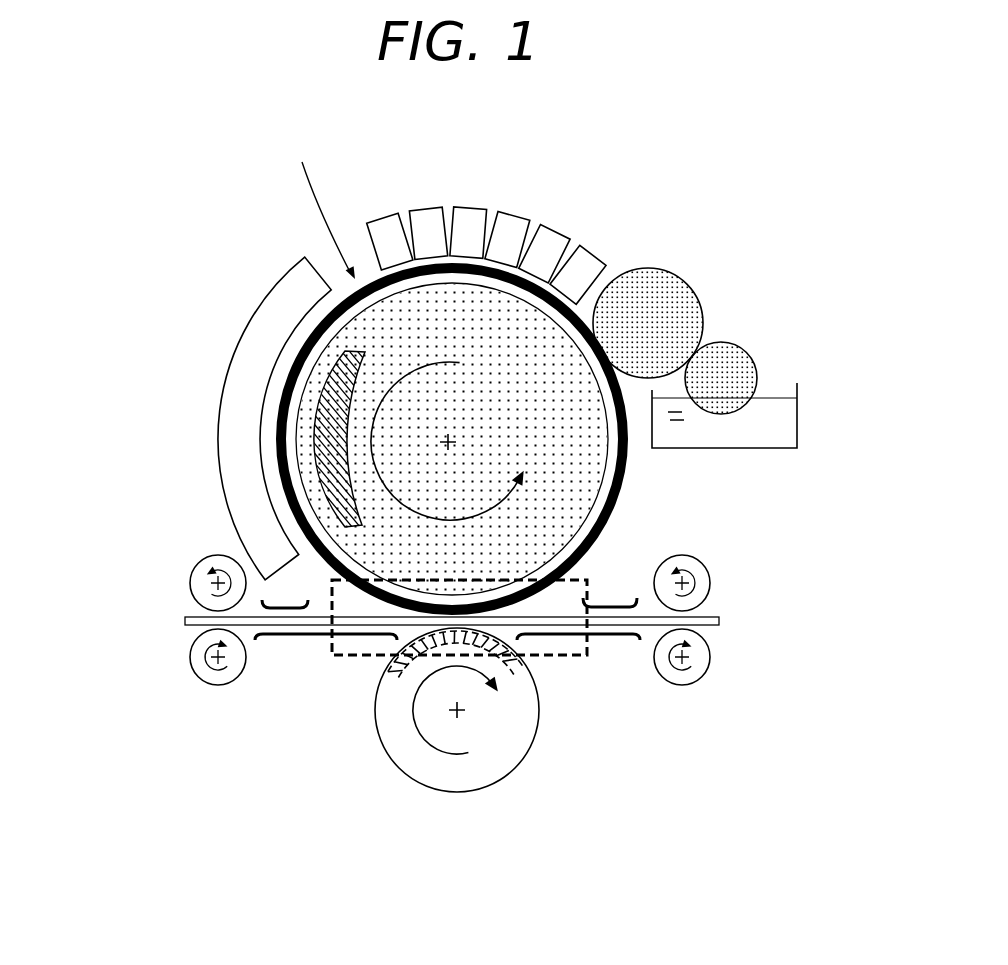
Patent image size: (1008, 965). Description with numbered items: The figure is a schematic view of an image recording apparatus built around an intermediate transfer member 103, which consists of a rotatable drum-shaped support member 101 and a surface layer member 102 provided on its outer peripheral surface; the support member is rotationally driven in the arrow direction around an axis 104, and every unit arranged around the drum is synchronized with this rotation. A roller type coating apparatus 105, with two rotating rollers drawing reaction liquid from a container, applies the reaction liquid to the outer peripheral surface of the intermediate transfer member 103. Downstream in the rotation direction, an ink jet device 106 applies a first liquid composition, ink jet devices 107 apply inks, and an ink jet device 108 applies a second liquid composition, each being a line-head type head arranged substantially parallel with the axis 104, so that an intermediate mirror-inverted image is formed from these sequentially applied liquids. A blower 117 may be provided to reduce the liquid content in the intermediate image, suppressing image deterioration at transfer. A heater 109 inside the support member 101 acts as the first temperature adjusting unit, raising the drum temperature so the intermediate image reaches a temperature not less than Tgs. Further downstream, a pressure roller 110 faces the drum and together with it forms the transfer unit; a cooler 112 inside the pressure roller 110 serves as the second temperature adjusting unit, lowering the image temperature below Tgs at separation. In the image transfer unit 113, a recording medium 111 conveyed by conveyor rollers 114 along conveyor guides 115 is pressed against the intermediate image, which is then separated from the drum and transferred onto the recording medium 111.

The support member 101 is at (567, 445).
The surface layer member 102 is at (620, 503).
The intermediate transfer member 103 is at (305, 209).
The axis 104 is at (435, 438).
The roller type coating apparatus 105 is at (678, 279).
The ink jet device 106 is at (600, 253).
The ink jet devices 107 is at (577, 217).
The ink jet device 108 is at (382, 212).
The heater 109 is at (323, 425).
The pressure roller 110 is at (450, 792).
The recording medium 111 is at (712, 621).
The cooler 112 is at (447, 633).
The image transfer unit 113 is at (362, 658).
The conveyor rollers 114 is at (197, 673).
The conveyor guides 115 is at (313, 636).
The blower 117 is at (242, 340).